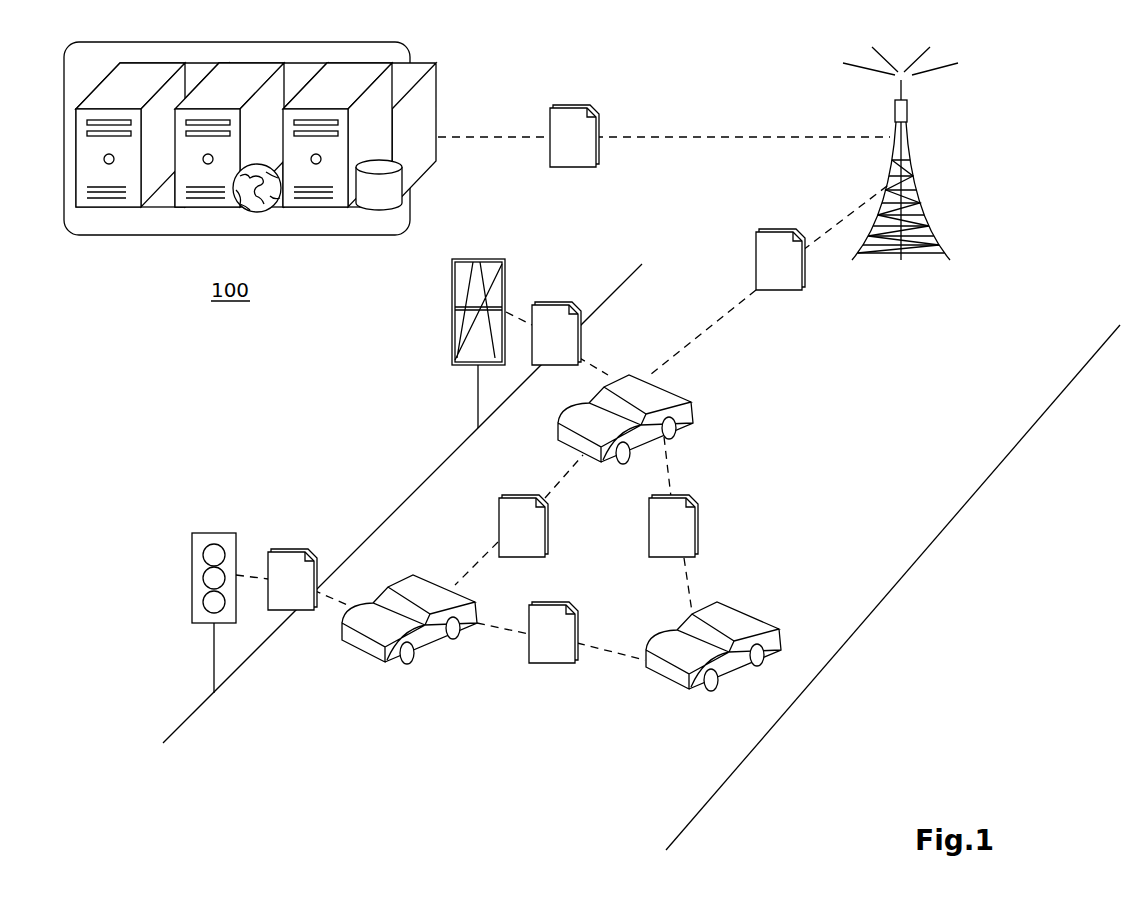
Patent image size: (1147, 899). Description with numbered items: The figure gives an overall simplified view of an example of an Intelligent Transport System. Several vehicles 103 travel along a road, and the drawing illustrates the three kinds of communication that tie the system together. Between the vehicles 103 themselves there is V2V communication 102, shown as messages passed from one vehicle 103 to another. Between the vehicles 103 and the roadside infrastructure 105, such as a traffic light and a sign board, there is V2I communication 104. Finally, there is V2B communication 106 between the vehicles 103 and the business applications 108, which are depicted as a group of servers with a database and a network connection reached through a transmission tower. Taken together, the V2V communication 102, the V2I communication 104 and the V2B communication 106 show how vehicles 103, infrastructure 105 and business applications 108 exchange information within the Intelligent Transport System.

The V2V communication 102 is at (547, 503).
The vehicles 103 is at (477, 602).
The V2I communication 104 is at (558, 305).
The infrastructure 105 is at (505, 262).
The V2B communication 106 is at (596, 113).
The business applications 108 is at (410, 86).